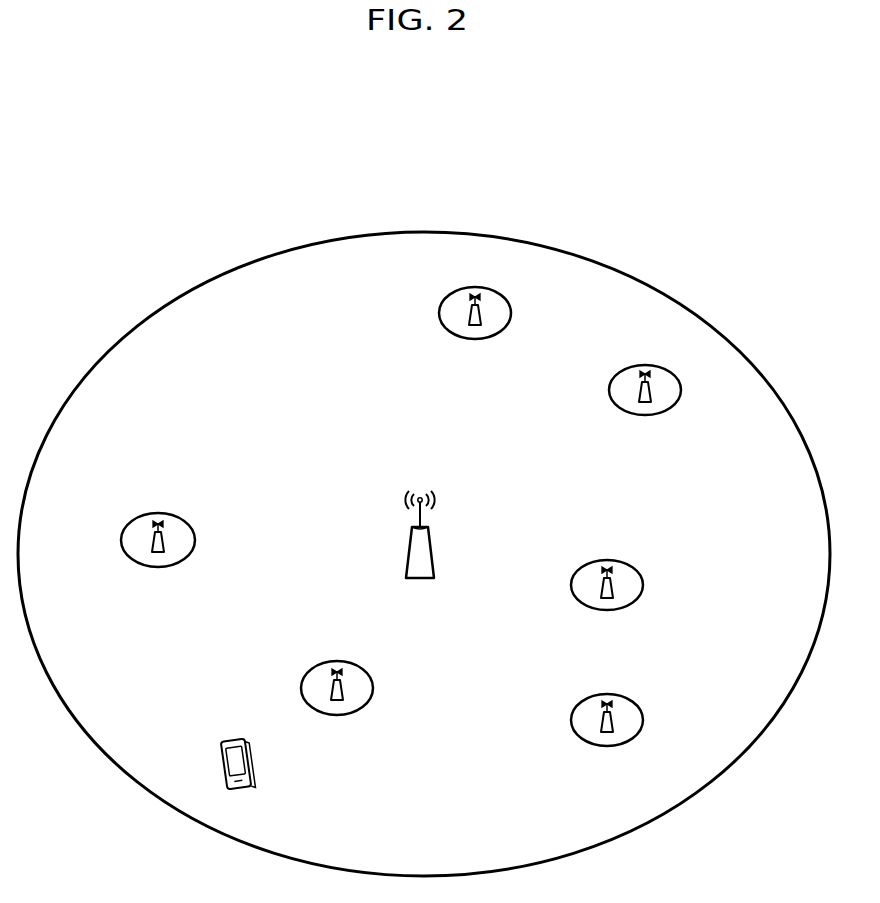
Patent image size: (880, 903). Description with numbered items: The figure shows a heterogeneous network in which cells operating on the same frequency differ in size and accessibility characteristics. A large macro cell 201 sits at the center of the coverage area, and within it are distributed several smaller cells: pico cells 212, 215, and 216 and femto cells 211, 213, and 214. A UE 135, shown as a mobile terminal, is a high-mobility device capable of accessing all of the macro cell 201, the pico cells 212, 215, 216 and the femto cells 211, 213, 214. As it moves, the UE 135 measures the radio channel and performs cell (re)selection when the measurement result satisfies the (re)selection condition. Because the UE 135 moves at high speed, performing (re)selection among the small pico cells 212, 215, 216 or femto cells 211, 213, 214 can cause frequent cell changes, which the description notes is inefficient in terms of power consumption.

The macro cell 201 is at (414, 497).
The femto cell 211 is at (150, 514).
The pico cell 212 is at (328, 663).
The femto cell 213 is at (572, 715).
The femto cell 214 is at (600, 561).
The pico cell 215 is at (610, 388).
The pico cell 216 is at (440, 311).
The UE 135 is at (230, 739).